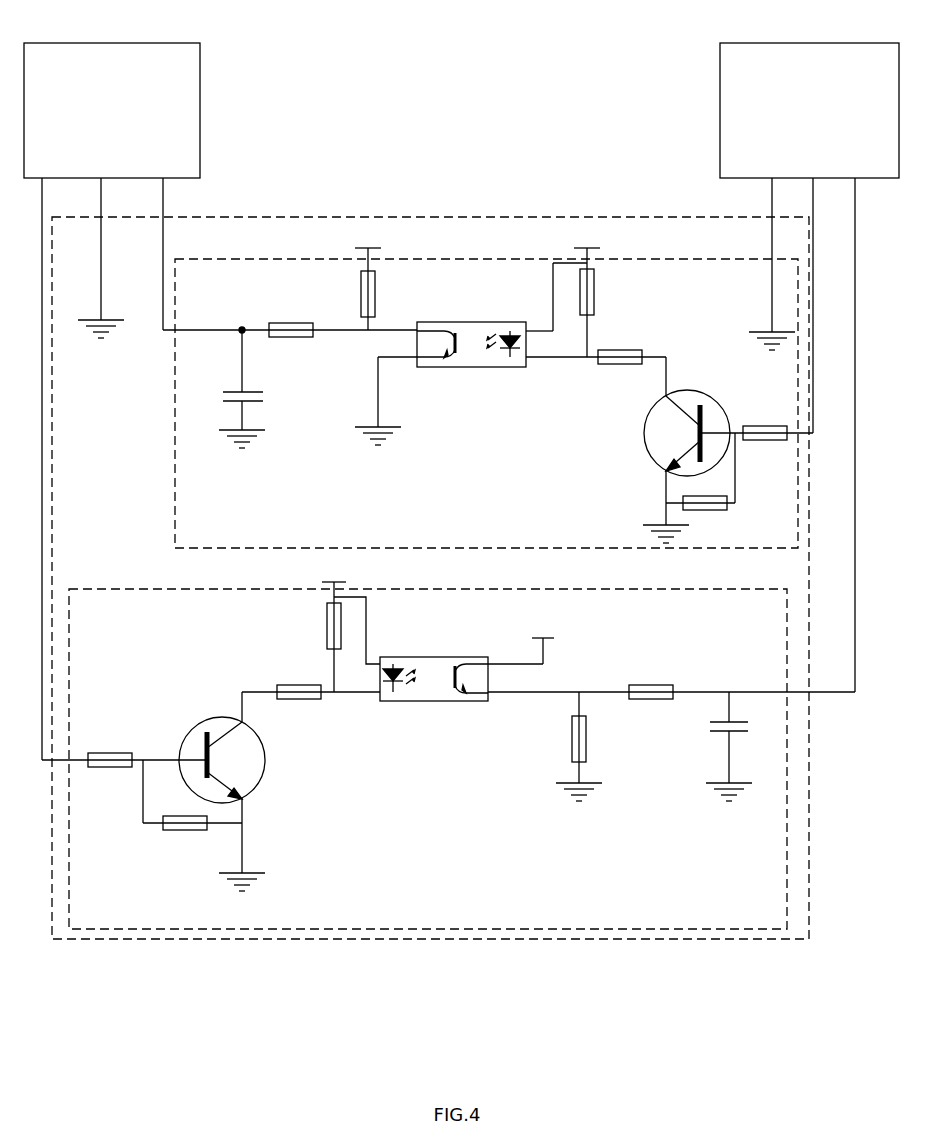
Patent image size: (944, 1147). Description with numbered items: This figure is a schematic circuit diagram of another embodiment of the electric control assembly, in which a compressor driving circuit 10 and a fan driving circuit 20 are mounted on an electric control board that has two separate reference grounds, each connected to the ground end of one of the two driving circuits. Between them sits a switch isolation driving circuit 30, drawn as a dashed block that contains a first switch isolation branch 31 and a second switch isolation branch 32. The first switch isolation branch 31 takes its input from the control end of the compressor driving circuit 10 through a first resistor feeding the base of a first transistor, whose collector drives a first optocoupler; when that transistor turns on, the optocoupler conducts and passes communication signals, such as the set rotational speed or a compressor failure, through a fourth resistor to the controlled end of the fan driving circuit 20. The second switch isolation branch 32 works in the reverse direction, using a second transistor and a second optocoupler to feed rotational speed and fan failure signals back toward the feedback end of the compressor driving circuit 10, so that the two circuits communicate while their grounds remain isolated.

The compressor driving circuit 10 is at (60, 43).
The fan driving circuit 20 is at (760, 43).
The switch isolation driving circuit 30 is at (445, 217).
The first switch isolation branch 31 is at (262, 589).
The second switch isolation branch 32 is at (295, 259).